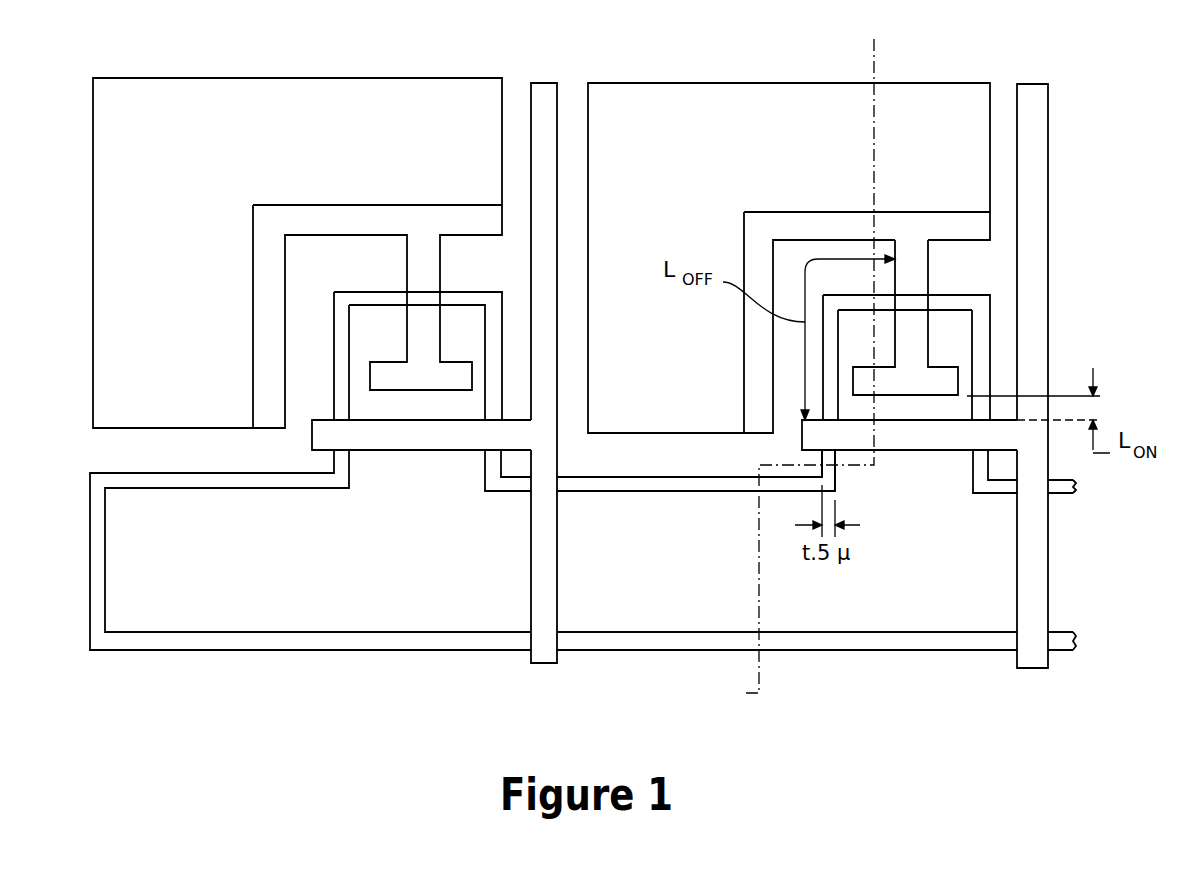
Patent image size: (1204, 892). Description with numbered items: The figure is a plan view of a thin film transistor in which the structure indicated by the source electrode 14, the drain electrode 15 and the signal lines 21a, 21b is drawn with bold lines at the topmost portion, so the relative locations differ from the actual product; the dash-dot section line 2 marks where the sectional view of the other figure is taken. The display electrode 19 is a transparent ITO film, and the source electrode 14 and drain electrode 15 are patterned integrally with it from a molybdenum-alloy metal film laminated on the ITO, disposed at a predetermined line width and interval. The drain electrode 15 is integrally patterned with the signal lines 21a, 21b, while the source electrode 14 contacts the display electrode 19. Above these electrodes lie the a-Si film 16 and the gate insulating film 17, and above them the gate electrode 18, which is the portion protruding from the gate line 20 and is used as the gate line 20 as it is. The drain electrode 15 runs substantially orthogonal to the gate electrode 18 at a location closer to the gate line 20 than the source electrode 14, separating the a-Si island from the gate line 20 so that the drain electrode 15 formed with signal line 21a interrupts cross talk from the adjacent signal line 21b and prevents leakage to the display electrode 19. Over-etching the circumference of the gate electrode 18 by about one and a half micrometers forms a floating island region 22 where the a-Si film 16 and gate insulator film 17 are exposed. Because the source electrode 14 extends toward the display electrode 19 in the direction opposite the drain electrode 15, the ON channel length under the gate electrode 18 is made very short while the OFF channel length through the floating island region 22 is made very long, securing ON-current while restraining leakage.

The source electrode 14 is at (924, 392).
The drain electrode 15 is at (933, 451).
The a-Si film 16 is at (1051, 357).
The gate insulating film 17 is at (988, 373).
The gate electrode 18 is at (963, 348).
The display electrode 19 is at (700, 82).
The gate line 20 is at (893, 633).
The signal line 21a is at (1048, 96).
The signal line 21b is at (550, 82).
The floating island region 22 is at (837, 478).
The section line 2- 2 is at (875, 39).